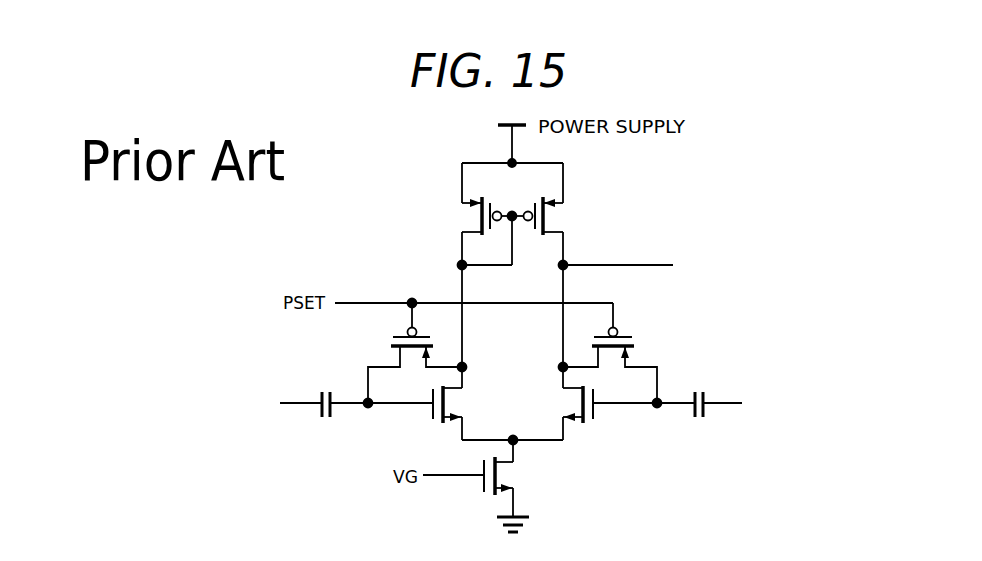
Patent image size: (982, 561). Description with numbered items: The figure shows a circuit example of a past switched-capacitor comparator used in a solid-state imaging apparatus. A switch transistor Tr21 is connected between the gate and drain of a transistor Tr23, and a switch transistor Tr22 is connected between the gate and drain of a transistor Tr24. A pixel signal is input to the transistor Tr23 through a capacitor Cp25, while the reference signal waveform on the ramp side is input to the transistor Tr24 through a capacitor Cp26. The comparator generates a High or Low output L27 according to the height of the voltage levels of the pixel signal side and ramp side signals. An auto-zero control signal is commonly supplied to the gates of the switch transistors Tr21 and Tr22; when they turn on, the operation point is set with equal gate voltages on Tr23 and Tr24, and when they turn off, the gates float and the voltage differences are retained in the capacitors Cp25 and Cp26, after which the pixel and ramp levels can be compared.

The switch transistor Tr21 is at (382, 337).
The switch transistor Tr22 is at (643, 337).
The transistor Tr23 is at (436, 412).
The transistor Tr24 is at (598, 412).
The capacitor Cp25 is at (320, 413).
The capacitor Cp26 is at (706, 415).
The output L27 is at (622, 264).